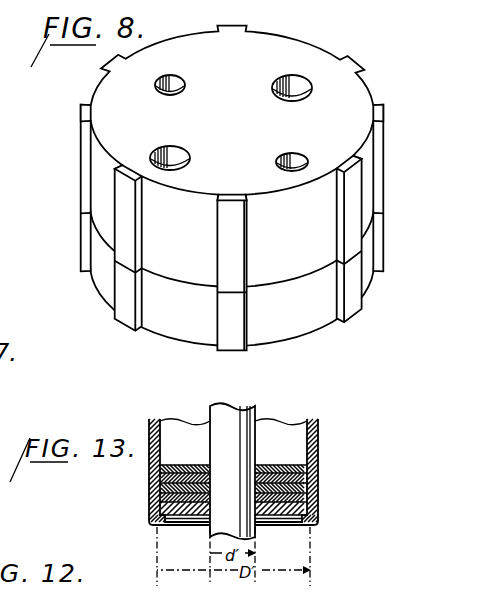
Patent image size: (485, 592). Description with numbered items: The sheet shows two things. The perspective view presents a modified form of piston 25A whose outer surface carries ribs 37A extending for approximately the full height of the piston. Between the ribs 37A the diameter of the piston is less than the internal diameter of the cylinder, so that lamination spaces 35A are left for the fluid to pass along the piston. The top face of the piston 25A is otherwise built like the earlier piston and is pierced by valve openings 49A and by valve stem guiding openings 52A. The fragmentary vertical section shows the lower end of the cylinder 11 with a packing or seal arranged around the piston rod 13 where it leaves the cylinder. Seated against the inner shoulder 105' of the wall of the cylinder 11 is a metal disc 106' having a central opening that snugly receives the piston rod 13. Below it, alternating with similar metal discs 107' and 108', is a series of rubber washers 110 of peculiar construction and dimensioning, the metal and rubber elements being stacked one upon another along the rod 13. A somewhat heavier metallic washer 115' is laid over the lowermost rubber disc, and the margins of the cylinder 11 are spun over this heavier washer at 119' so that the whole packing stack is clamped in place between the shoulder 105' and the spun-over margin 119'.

In FIG. 8, the modified form of piston 25A is at (364, 83).
In FIG. 8, the lamination spaces 35A is at (287, 325).
In FIG. 8, the ribs 37A is at (333, 56).
In FIG. 8, the valve openings 49A is at (278, 98).
In FIG. 8, the valve stem guiding openings 52A is at (185, 87).
In FIG. 13, the cylinder 11 is at (315, 431).
In FIG. 13, the piston rod 13 is at (247, 421).
In FIG. 13, the inner shoulder 105' is at (270, 470).
In FIG. 13, the metal disc 106' is at (233, 443).
In FIG. 13, the metal disc 107' is at (193, 480).
In FIG. 13, the metal disc 108' is at (181, 503).
In FIG. 13, the rubber washers 110 is at (318, 496).
In FIG. 13, the metallic washer 115' is at (277, 517).
In FIG. 13, the spun-over margins 119' is at (191, 533).